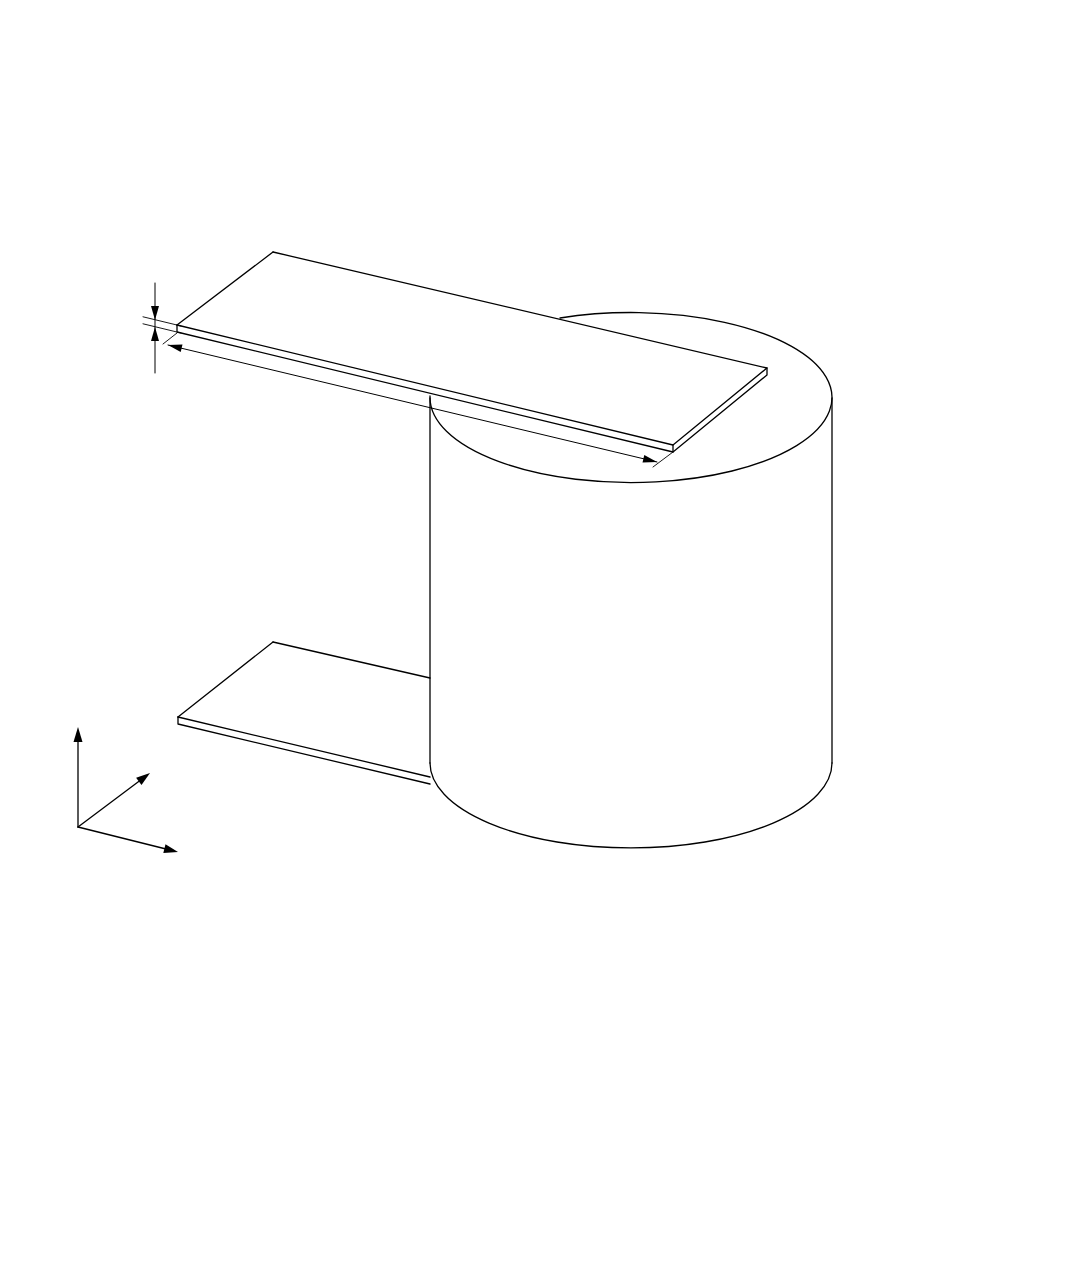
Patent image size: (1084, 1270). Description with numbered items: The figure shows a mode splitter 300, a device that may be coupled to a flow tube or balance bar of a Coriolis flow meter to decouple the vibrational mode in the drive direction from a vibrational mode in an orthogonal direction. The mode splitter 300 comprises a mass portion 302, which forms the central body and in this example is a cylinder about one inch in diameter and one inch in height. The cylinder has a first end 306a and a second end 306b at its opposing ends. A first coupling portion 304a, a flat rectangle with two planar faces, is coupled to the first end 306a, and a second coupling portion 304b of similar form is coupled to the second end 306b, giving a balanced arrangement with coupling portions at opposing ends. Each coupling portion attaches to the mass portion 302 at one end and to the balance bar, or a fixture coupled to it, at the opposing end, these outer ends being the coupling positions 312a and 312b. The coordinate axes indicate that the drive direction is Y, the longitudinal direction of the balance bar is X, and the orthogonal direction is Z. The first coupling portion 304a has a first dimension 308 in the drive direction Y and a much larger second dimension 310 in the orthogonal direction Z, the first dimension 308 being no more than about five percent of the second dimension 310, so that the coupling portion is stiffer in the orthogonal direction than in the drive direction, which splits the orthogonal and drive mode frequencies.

The mode splitter 300 is at (195, 157).
The mass portion 302 is at (817, 557).
The first coupling portion 304a is at (377, 290).
The second coupling portion 304b is at (322, 760).
The first end 306a is at (693, 333).
The second end 306b is at (600, 848).
The first dimension 308 is at (153, 297).
The second dimension 310 is at (297, 372).
The coupling position 312a is at (255, 263).
The coupling position 312b is at (220, 682).